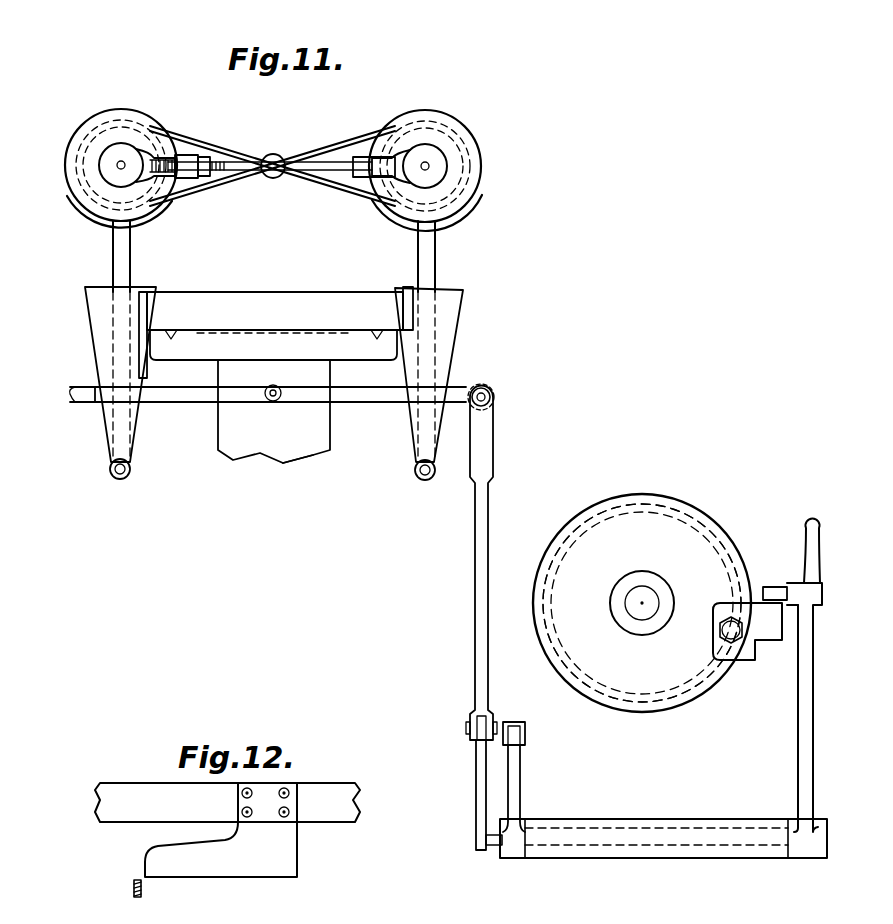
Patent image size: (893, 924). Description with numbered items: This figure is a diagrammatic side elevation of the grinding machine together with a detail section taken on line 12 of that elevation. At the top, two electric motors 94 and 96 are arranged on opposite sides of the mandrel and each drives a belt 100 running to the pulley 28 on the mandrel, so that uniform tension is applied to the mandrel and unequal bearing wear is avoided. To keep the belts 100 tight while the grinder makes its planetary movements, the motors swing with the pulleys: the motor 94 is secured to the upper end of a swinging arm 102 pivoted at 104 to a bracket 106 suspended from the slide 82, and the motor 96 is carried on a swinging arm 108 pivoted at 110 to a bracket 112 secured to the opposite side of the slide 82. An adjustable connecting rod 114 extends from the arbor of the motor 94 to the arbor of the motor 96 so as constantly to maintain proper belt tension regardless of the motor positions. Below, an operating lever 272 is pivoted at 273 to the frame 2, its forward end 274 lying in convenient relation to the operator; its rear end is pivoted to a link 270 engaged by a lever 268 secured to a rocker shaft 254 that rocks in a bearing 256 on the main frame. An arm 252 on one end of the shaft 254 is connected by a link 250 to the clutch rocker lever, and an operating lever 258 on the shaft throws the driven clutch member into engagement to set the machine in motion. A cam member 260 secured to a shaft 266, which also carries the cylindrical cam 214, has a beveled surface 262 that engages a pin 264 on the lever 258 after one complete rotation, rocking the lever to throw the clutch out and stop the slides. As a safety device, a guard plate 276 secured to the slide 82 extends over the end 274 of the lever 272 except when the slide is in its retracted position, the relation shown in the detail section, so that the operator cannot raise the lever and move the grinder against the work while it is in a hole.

In FIG. 11, the frame 2 is at (314, 462).
In FIG. 11, the section line 12— 12 is at (128, 272).
In FIG. 11, the pulley 28 is at (273, 154).
In FIG. 11, the slide 82 is at (264, 293).
In FIG. 12, the slide 82 is at (325, 789).
In FIG. 11, the electric motor 94 is at (410, 117).
In FIG. 11, the electric motor 96 is at (150, 104).
In FIG. 11, the belts 100 is at (245, 142).
In FIG. 11, the swinging arm 102 is at (461, 258).
In FIG. 11, the pivot 104 is at (424, 481).
In FIG. 11, the bracket 106 is at (446, 344).
In FIG. 11, the swinging arm 108 is at (113, 251).
In FIG. 11, the pivot 110 is at (118, 480).
In FIG. 11, the bracket 112 is at (105, 340).
In FIG. 11, the adjustable connecting rod 114 is at (330, 172).
In FIG. 11, the cylindrical cam 214 is at (638, 495).
In FIG. 11, the link 250 is at (522, 713).
In FIG. 11, the arm 252 is at (521, 788).
In FIG. 11, the rocker shaft 254 is at (650, 860).
In FIG. 11, the bearing 256 is at (660, 813).
In FIG. 11, the operating lever 258 is at (798, 726).
In FIG. 11, the cam member 260 is at (722, 545).
In FIG. 11, the beveled surface 262 is at (776, 641).
In FIG. 11, the pin 264 is at (772, 587).
In FIG. 11, the shaft 266 is at (641, 597).
In FIG. 11, the lever 268 is at (476, 770).
In FIG. 11, the link 270 is at (475, 556).
In FIG. 11, the operating lever 272 is at (378, 403).
In FIG. 11, the pivot 273 is at (270, 403).
In FIG. 11, the forward end 274 is at (93, 396).
In FIG. 12, the forward end 274 is at (143, 889).
In FIG. 11, the guard plate 276 is at (150, 375).
In FIG. 12, the guard plate 276 is at (148, 861).